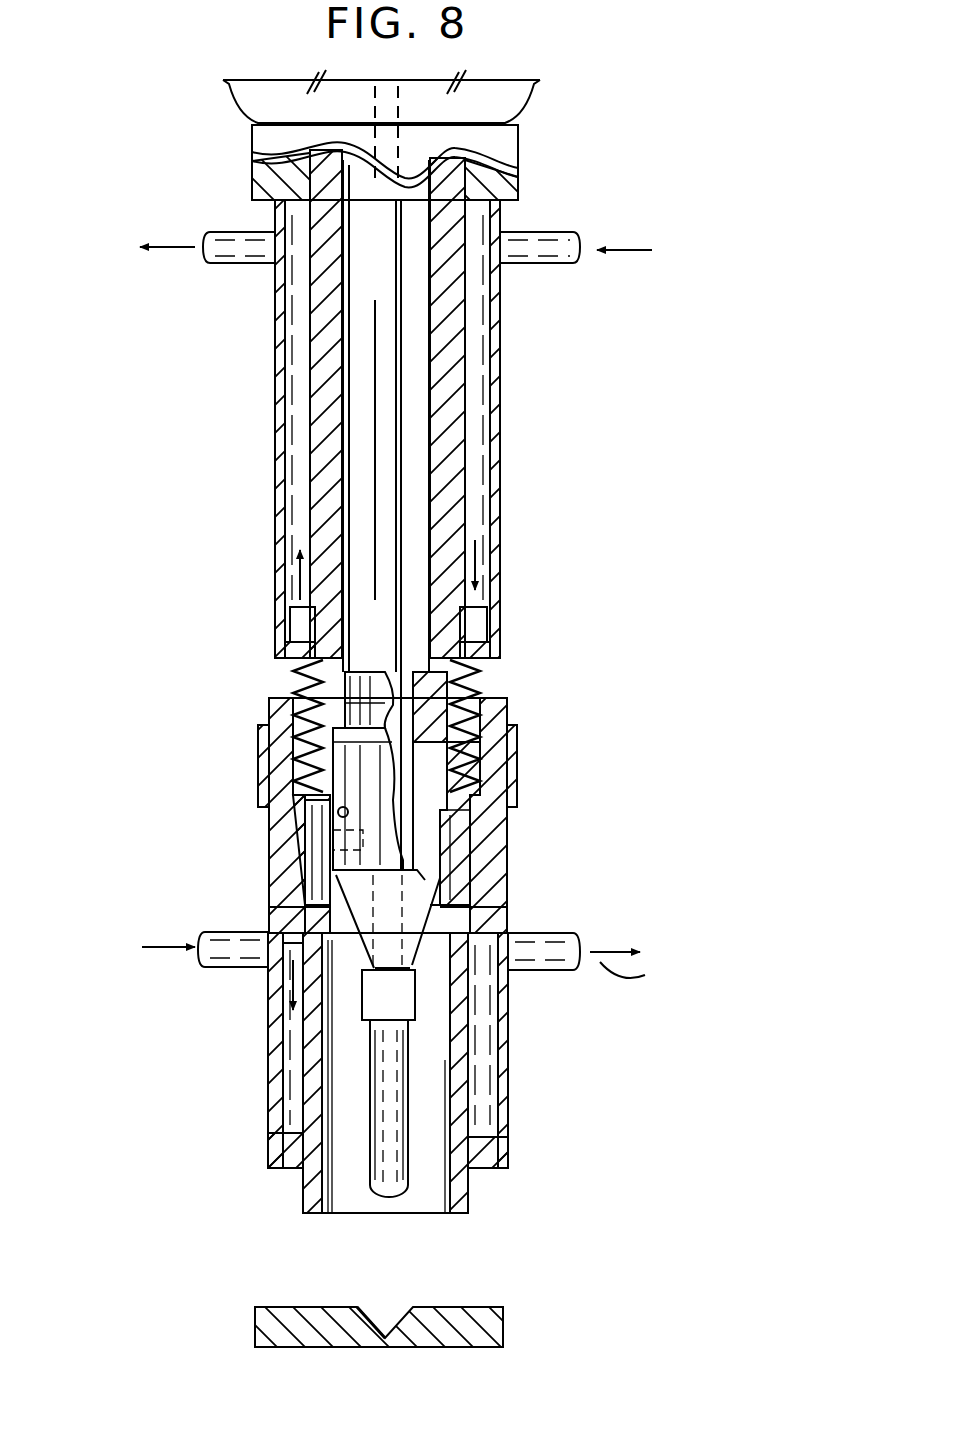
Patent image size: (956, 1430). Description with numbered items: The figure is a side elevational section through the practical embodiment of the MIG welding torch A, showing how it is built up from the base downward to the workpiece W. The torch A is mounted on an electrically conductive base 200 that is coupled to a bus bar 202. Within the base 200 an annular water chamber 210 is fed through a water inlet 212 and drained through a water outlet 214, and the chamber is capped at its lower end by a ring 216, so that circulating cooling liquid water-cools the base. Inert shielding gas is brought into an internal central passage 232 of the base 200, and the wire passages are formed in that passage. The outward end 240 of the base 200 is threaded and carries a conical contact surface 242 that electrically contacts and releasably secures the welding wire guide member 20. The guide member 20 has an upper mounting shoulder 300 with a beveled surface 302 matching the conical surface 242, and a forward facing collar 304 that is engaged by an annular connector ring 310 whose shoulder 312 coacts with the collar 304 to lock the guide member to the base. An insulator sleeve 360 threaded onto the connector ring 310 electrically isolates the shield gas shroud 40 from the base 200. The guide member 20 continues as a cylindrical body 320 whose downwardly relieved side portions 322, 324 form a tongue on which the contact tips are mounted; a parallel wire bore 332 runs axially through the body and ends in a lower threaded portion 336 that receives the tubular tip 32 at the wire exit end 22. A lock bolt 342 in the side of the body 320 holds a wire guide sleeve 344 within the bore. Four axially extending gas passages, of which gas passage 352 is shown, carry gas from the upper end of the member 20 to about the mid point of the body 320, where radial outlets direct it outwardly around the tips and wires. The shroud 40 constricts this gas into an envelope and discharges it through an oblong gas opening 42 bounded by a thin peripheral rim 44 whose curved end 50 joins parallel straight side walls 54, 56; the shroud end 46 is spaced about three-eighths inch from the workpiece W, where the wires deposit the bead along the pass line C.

The bus bar 202 is at (262, 140).
The base 200 is at (440, 192).
The water outlet 214 is at (235, 240).
The water inlet 212 is at (500, 235).
The annular water chamber 210 is at (295, 620).
The ring 216 is at (500, 630).
The internal central passage 232 is at (425, 620).
The beveled surface 302 is at (305, 665).
The outward end 240 is at (455, 670).
The gas passage 352 is at (440, 695).
The conical contact surface 242 is at (460, 730).
The shoulder 312 is at (455, 758).
The wire guide sleeve 344 is at (460, 790).
The insulator sleeve 360 is at (270, 715).
The shoulder 300 is at (300, 745).
The forward facing collar 304 is at (300, 777).
The annular connector ring 310 is at (310, 790).
The welding torch A is at (262, 827).
The lock bolt 342 is at (270, 873).
The cylindrical body 320 is at (340, 885).
The welding wire guide member 20 is at (462, 878).
The relieved side portion 322 is at (430, 900).
The relieved side portion 324 is at (300, 960).
The wire bore 332 is at (262, 1010).
The lower threaded portion 336 is at (400, 990).
The wire exit end 22 is at (400, 1010).
The tubular tip 32 is at (396, 1080).
The shield gas shroud 40 is at (470, 1113).
The straight side wall 54 is at (308, 1190).
The straight side wall 56 is at (460, 1195).
The peripheral rim 44 is at (303, 1216).
The end of the shroud 46 is at (360, 1215).
The curved end 50 is at (383, 1215).
The oblong gas opening 42 is at (440, 1216).
The pass line C is at (395, 1303).
The workpiece W is at (510, 1320).